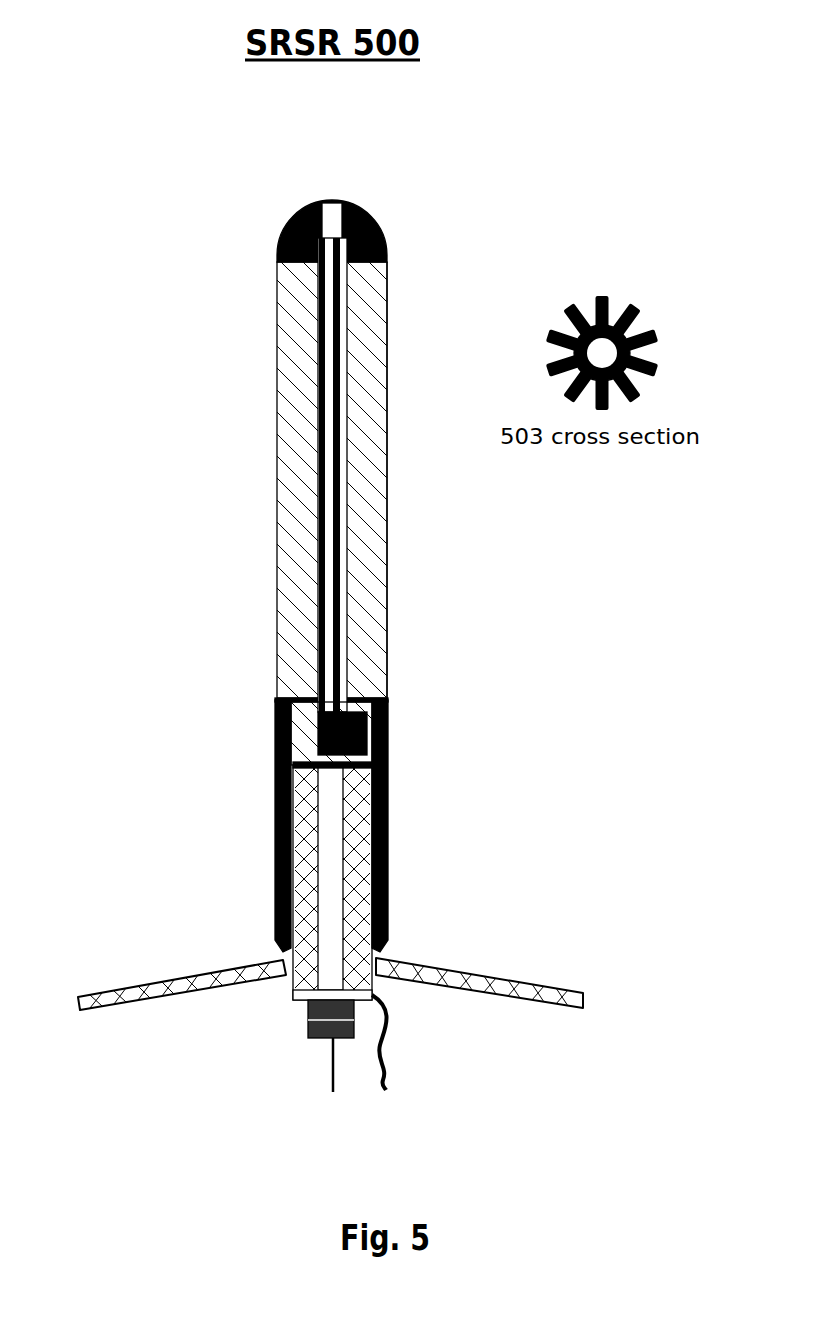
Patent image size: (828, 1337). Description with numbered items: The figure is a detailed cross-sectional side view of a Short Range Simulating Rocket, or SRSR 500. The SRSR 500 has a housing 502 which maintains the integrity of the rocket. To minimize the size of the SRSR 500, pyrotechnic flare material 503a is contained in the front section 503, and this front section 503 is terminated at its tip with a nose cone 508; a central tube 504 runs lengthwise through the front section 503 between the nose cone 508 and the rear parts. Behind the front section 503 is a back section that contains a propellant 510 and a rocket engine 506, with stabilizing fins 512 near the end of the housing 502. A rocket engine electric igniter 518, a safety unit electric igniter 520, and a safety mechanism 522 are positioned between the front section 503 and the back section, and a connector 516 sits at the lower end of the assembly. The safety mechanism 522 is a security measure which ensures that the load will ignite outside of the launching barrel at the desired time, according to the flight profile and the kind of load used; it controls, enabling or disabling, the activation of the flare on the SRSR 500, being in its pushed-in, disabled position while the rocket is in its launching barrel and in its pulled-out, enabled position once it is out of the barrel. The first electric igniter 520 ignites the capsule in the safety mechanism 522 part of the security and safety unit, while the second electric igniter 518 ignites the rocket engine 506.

The Short Range Simulating Rocket (SRSR) 500 is at (560, 166).
The housing 502 is at (218, 915).
The front section 503 is at (290, 516).
The pyrotechnic flare material 503a is at (378, 376).
The central tube 504 is at (330, 386).
The rocket engine 506 is at (372, 866).
The nose cone 508 is at (370, 214).
The propellant 510 is at (308, 836).
The stabilizing fins 512 is at (193, 990).
The connector 516 is at (310, 1026).
The rocket engine electric igniter 518 is at (320, 1086).
The safety unit electric igniter 520 is at (380, 1050).
The safety mechanism 522 is at (384, 750).